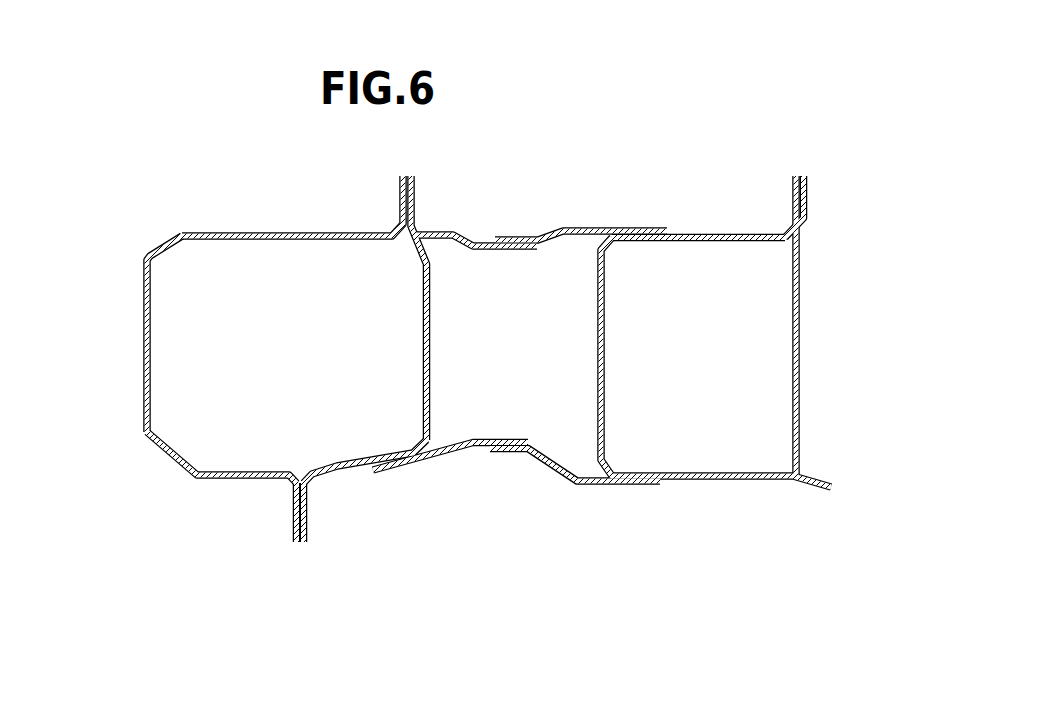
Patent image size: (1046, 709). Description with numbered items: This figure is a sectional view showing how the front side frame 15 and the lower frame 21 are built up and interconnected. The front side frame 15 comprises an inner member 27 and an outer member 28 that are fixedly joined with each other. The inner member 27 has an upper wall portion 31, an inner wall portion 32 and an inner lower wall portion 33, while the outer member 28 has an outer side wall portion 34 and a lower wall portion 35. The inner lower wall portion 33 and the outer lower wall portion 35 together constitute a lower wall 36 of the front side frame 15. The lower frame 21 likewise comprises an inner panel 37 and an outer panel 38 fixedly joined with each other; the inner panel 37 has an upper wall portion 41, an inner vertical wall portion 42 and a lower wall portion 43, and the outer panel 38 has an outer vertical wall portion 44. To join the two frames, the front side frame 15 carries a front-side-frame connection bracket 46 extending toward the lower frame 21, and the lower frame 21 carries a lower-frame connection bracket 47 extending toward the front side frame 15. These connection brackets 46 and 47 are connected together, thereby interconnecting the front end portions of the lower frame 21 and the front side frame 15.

The front side frame 15 is at (368, 550).
The lower frame 21 is at (793, 165).
The inner member 27 is at (209, 480).
The outer member 28 is at (338, 480).
The upper wall portion 31 is at (248, 232).
The inner wall portion 32 is at (142, 352).
The inner lower wall portion 33 is at (245, 470).
The outer side wall portion 34 is at (430, 350).
The lower wall portion 35 is at (365, 436).
The lower wall 36 is at (287, 417).
The inner panel 37 is at (702, 223).
The outer panel 38 is at (808, 262).
The upper wall portion 41 is at (728, 233).
The inner vertical wall portion 42 is at (595, 363).
The lower wall portion 43 is at (710, 480).
The outer vertical wall portion 44 is at (798, 342).
The front-side-frame connection bracket 46 is at (453, 233).
The lower-frame connection bracket 47 is at (568, 230).